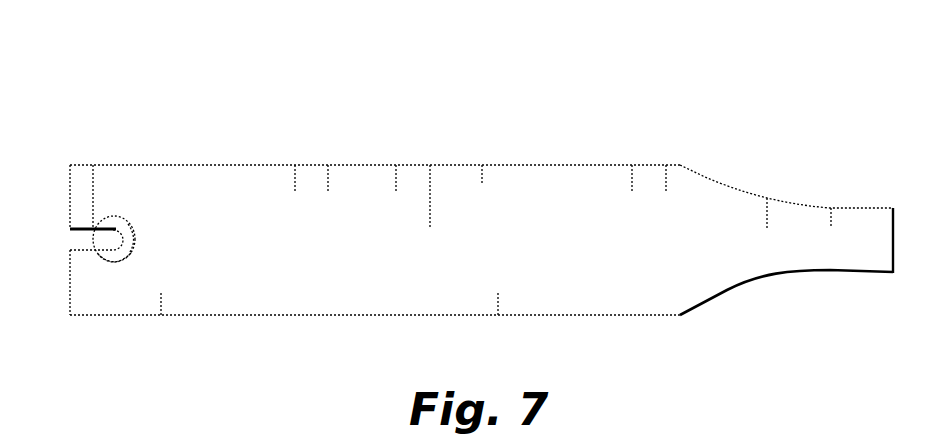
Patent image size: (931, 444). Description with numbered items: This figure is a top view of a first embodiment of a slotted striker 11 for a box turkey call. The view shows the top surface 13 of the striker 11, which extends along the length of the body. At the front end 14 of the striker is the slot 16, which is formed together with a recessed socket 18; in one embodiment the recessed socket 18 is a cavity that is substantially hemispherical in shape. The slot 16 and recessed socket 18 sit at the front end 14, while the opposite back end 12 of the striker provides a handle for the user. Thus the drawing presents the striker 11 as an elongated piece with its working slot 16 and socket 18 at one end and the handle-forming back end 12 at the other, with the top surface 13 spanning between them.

The slotted striker 11 is at (283, 93).
The back end 12 is at (831, 208).
The top surface 13 is at (482, 165).
The front end 14 is at (107, 177).
The slot 16 is at (68, 240).
The recessed socket 18 is at (121, 217).